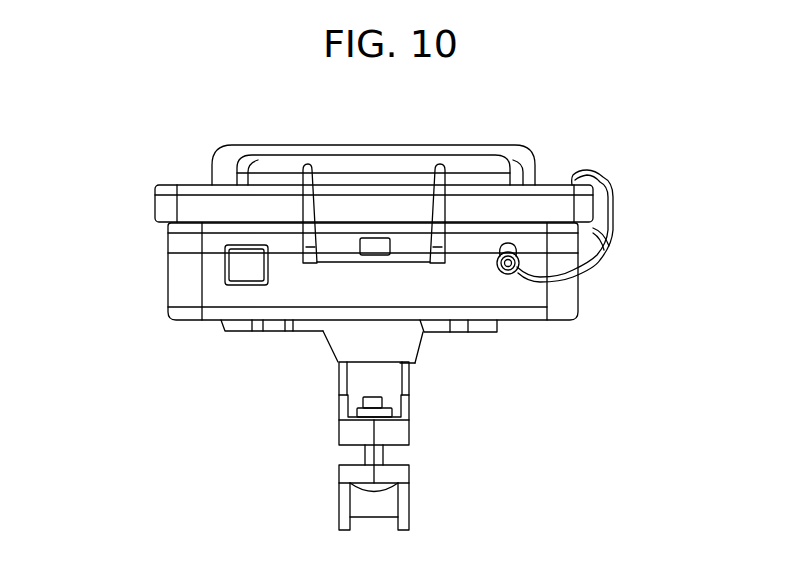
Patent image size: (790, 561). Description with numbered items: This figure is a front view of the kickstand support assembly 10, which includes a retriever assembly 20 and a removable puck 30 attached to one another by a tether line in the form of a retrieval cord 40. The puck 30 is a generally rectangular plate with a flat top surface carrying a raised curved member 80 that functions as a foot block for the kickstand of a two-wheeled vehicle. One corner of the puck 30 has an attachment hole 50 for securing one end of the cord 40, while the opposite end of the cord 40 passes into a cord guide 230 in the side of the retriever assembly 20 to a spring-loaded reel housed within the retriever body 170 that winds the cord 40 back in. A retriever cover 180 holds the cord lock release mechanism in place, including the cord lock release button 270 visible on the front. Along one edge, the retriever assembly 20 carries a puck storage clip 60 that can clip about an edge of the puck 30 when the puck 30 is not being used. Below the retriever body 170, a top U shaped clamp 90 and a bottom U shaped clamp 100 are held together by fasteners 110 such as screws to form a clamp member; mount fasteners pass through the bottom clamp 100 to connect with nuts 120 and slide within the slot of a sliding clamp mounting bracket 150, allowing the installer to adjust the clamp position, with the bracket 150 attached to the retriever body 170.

The kickstand support assembly 10 is at (667, 110).
The retriever assembly 20 is at (110, 348).
The removable puck 30 is at (334, 181).
The retrieval cord 40 is at (620, 219).
The attachment hole 50 is at (571, 176).
The puck storage clip 60 is at (359, 173).
The raised curved member 80 is at (350, 139).
The top U shaped clamp 90 is at (432, 487).
The bottom U shaped clamp 100 is at (440, 422).
The fasteners 110 is at (325, 504).
The nuts 120 is at (307, 429).
The sliding clamp mounting bracket 150 is at (431, 362).
The retriever body 170 is at (305, 271).
The retriever cover 180 is at (305, 253).
The cord guide 230 is at (457, 187).
The cord lock release button 270 is at (205, 314).